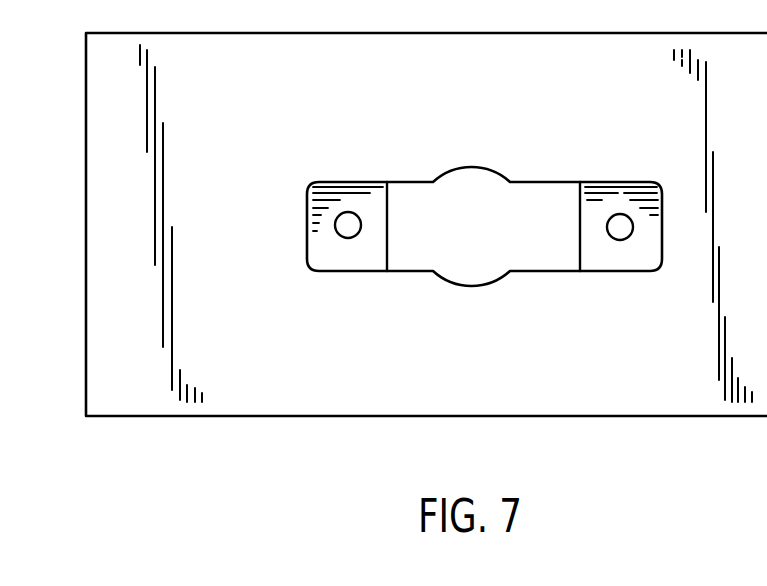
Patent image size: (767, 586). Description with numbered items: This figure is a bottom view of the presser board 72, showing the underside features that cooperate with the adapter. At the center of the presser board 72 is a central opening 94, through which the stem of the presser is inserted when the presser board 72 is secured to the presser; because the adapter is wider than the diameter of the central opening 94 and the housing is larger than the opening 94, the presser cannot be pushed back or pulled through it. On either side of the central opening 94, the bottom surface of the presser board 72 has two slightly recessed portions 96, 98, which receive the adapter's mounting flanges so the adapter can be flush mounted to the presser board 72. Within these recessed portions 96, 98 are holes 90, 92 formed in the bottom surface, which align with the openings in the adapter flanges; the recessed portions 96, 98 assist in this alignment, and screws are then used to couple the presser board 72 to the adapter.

The presser board 72 is at (250, 372).
The hole 90 is at (351, 224).
The hole 92 is at (615, 226).
The central opening 94 is at (460, 238).
The recessed portion 96 is at (373, 253).
The recessed portion 98 is at (592, 254).